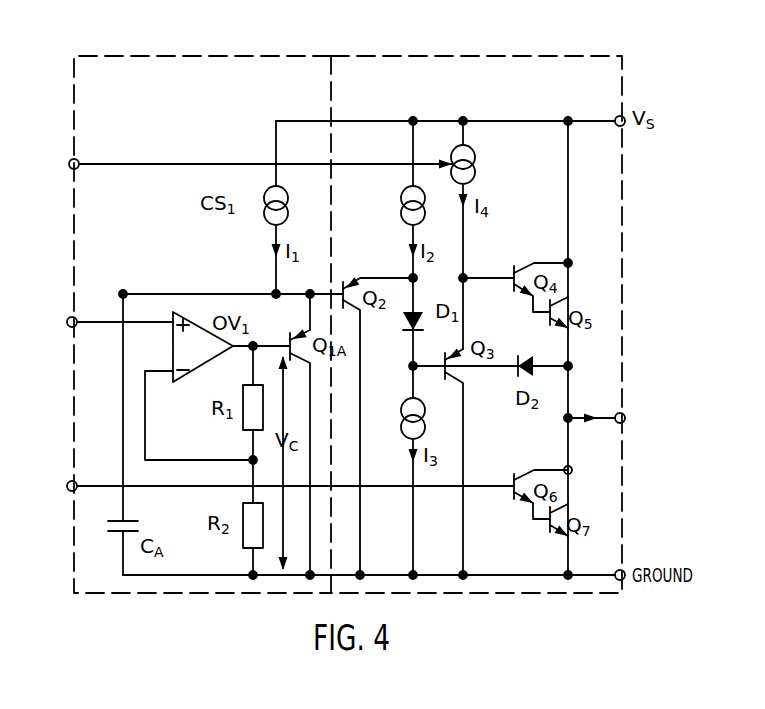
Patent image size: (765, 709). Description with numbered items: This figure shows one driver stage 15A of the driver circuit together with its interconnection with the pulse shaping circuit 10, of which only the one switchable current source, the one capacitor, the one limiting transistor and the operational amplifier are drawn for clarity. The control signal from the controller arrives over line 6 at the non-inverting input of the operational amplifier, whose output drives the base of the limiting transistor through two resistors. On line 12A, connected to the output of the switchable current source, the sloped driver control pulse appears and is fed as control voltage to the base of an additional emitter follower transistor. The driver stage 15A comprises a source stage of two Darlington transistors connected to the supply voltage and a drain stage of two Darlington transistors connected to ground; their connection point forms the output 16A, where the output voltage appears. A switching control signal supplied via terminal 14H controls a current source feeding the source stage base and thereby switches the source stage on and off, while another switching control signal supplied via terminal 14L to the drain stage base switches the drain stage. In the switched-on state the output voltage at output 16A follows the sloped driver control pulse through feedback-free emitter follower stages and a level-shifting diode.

The pulse shaping circuit 10 is at (199, 56).
The driver stage 15A is at (486, 56).
The terminal 14H is at (79, 161).
The line 6 is at (77, 318).
The terminal 14L is at (77, 482).
The line 12A is at (126, 291).
The output 16A is at (624, 414).